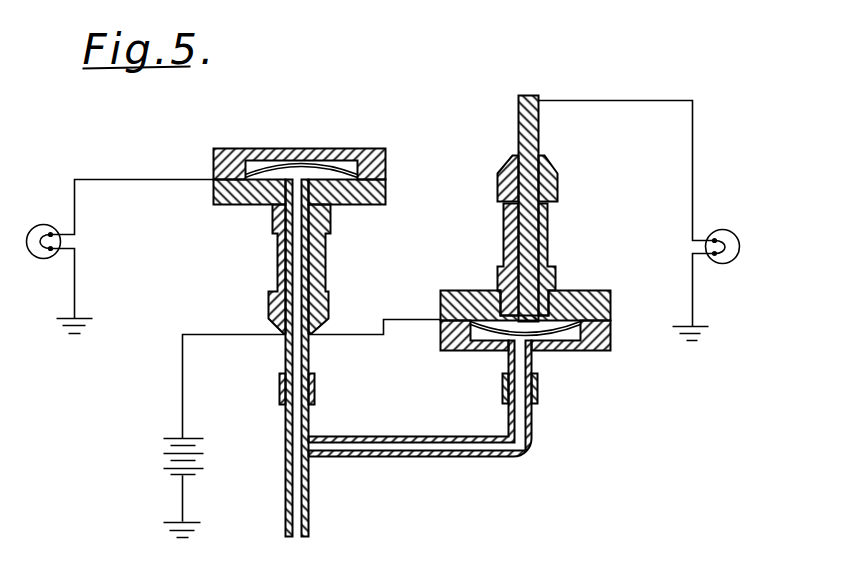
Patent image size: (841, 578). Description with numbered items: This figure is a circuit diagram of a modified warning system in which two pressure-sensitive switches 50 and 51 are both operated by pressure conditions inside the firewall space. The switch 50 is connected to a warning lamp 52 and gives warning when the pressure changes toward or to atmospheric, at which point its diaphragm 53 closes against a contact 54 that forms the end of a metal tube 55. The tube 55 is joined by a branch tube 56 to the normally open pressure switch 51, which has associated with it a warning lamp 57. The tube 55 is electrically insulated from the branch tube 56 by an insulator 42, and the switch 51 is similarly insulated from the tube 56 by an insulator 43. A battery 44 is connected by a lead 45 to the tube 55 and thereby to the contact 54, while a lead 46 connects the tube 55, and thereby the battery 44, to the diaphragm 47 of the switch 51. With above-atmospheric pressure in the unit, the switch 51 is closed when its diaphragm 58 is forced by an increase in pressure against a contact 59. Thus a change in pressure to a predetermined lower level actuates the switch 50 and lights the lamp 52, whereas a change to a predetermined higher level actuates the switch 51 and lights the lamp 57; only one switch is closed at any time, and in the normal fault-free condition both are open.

The insulator 42 is at (314, 383).
The insulator 43 is at (538, 398).
The battery 44 is at (160, 450).
The lead 45 is at (208, 331).
The lead 46 is at (337, 331).
The diaphragm 47 is at (610, 317).
The pressure-sensitive switch 50 is at (276, 254).
The pressure-sensitive switch 51 is at (562, 263).
The warning lamp 52 is at (41, 256).
The diaphragm 53 is at (328, 160).
The contact 54 is at (330, 178).
The metal tube 55 is at (322, 259).
The branch tube 56 is at (362, 434).
The warning lamp 57 is at (722, 228).
The diaphragm 58 is at (553, 332).
The contact 59 is at (535, 320).